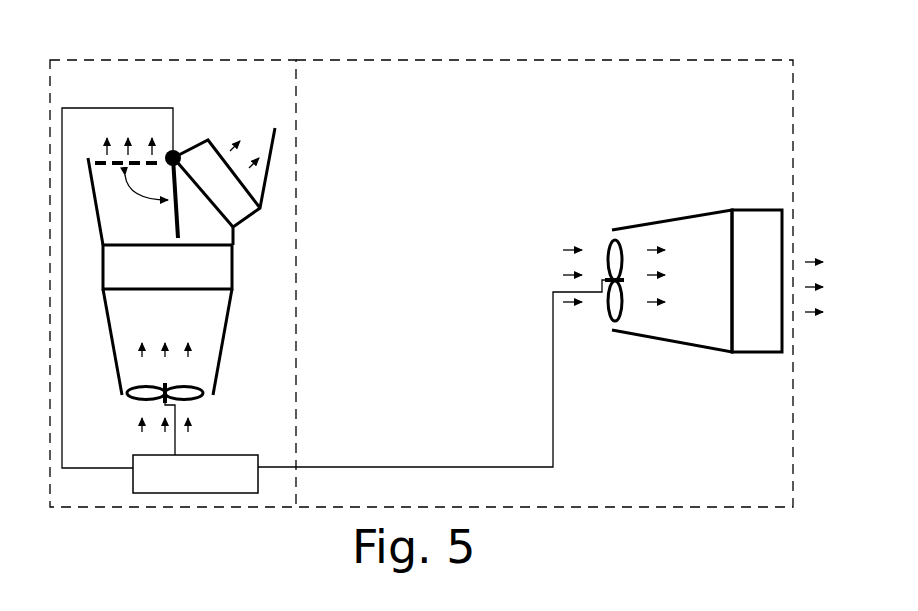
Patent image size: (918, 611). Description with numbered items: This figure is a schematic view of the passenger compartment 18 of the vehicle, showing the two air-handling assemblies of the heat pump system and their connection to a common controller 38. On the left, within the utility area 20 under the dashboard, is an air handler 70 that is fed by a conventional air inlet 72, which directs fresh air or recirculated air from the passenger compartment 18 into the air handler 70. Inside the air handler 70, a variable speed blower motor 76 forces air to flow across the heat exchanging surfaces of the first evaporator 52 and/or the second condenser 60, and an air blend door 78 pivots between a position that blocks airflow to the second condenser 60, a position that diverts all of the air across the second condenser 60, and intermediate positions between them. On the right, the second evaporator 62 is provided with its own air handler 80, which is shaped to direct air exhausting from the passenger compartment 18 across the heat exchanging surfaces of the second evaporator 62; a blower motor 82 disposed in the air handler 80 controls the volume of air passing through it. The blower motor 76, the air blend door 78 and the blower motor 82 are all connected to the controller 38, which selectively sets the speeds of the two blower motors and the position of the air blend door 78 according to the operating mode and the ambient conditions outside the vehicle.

The passenger compartment 18 is at (506, 50).
The utility area 20 is at (198, 70).
The controller 38 is at (226, 455).
The first evaporator 52 is at (115, 268).
The second condenser 60 is at (198, 152).
The second evaporator 62 is at (765, 210).
The air handler 70 is at (222, 270).
The air inlet 72 is at (222, 355).
The blower motor 76 is at (203, 395).
The air blend door 78 is at (177, 208).
The air handler 80 is at (690, 215).
The blower motor 82 is at (610, 262).